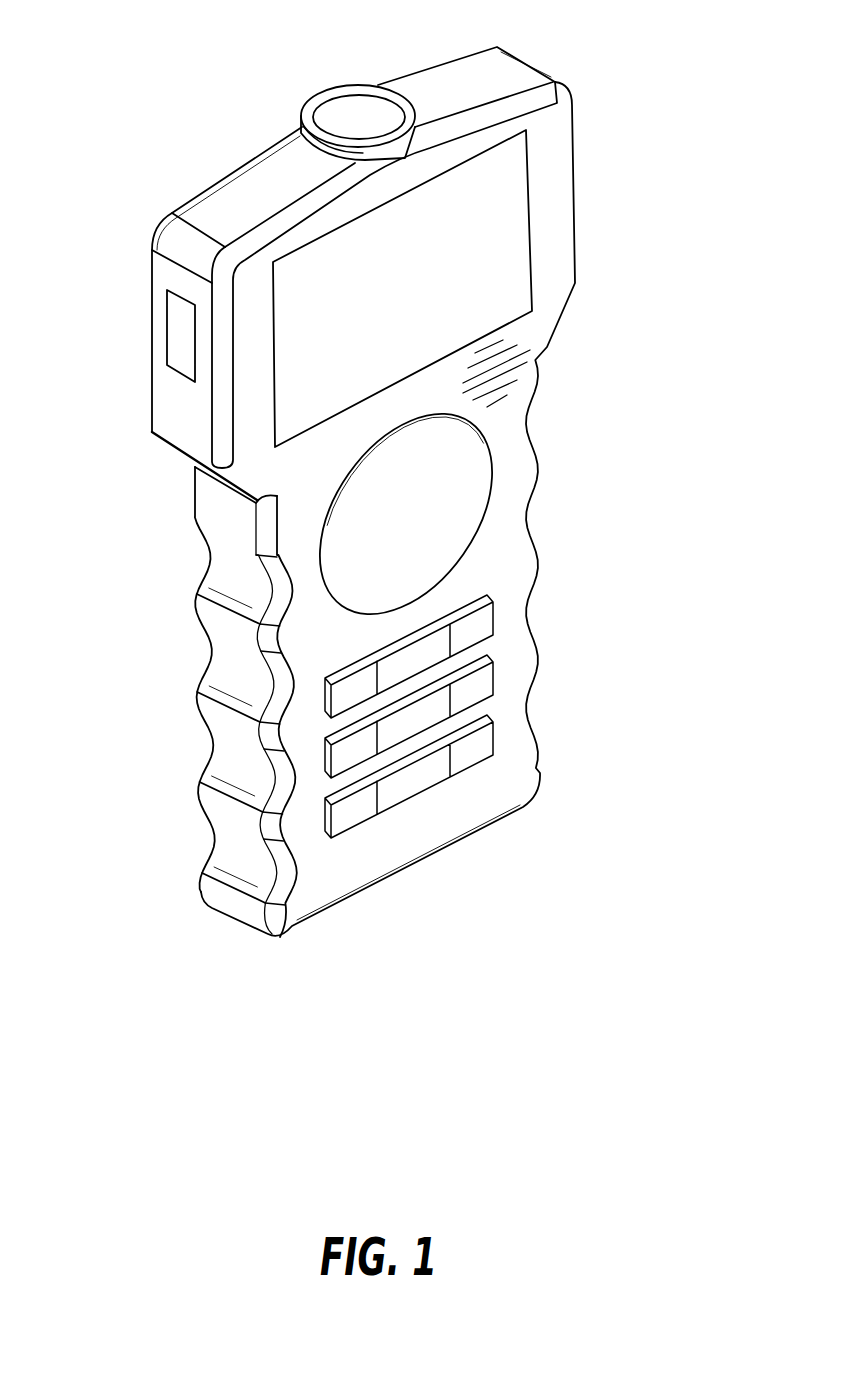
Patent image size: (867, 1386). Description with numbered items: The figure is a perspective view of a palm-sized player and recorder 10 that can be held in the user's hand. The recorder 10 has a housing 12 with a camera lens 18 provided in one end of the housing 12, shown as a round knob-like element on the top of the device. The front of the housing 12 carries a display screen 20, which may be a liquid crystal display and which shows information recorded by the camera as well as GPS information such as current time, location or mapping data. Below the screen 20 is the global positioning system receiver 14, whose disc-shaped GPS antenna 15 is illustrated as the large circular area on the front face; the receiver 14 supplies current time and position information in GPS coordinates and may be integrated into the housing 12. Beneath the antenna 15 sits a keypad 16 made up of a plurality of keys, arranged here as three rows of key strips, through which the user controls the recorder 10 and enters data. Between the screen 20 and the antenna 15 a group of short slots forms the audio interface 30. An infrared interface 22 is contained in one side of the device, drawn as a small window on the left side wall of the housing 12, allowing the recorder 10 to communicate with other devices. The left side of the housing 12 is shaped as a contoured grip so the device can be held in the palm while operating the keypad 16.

The player and recorder 10 is at (643, 248).
The housing 12 is at (562, 184).
The global positioning system (GPS) receiver 14 is at (455, 536).
The GPS antenna 15 is at (475, 502).
The keypad 16 is at (477, 693).
The camera lens 18 is at (339, 102).
The display screen 20 is at (307, 410).
The infrared (IR) interface 22 is at (173, 327).
The audio interface 30 is at (517, 353).